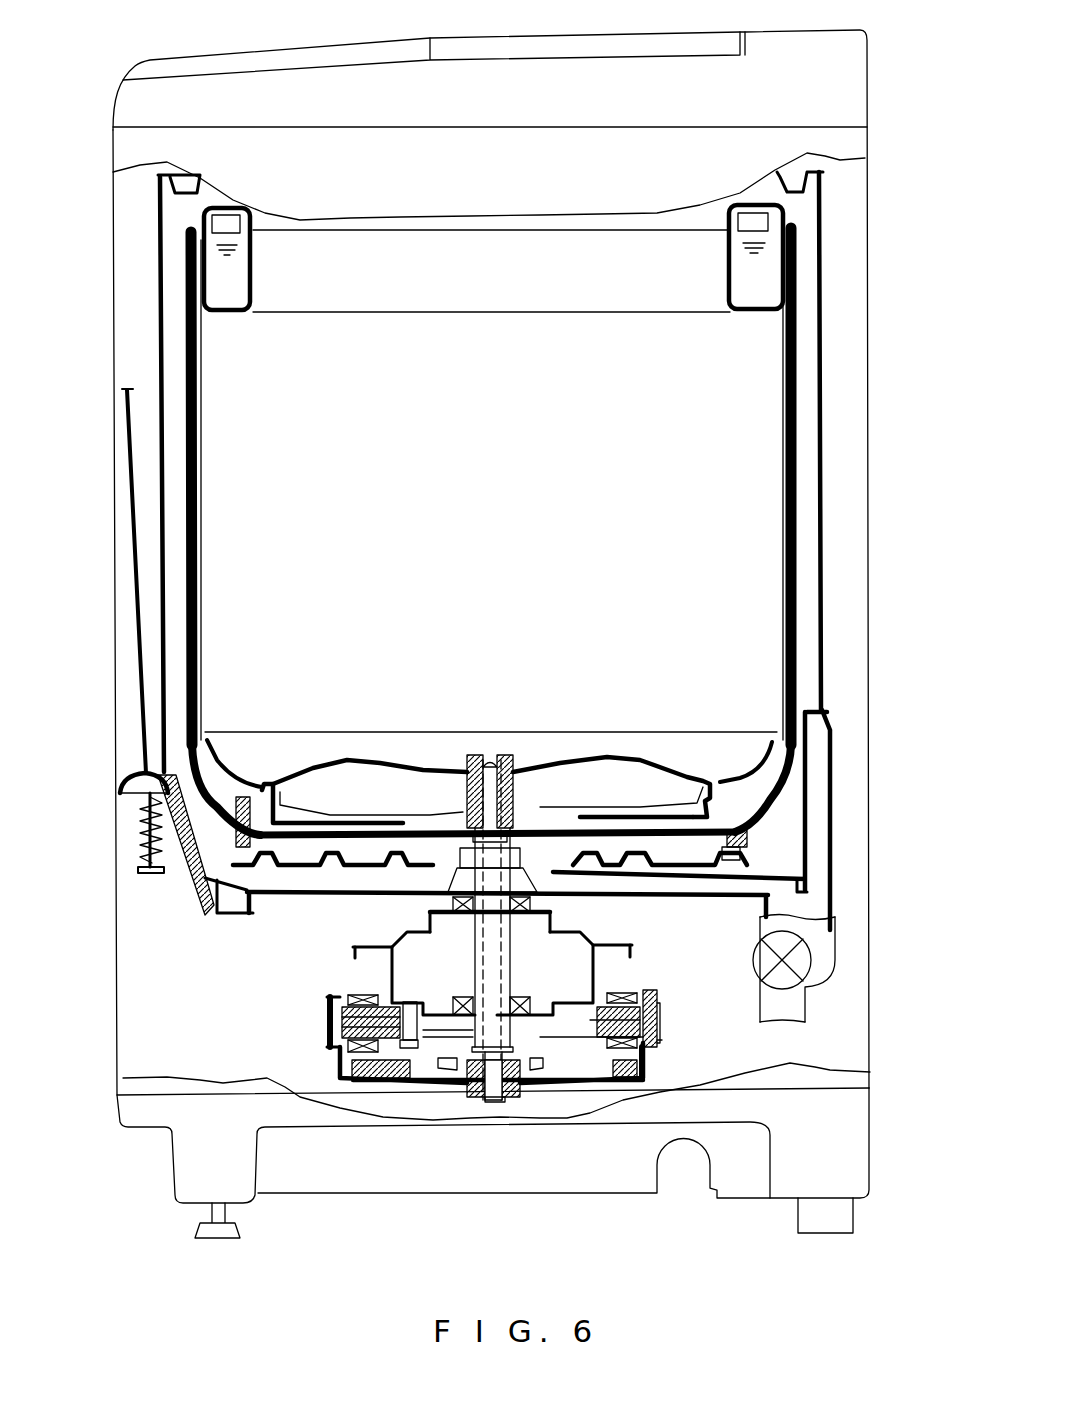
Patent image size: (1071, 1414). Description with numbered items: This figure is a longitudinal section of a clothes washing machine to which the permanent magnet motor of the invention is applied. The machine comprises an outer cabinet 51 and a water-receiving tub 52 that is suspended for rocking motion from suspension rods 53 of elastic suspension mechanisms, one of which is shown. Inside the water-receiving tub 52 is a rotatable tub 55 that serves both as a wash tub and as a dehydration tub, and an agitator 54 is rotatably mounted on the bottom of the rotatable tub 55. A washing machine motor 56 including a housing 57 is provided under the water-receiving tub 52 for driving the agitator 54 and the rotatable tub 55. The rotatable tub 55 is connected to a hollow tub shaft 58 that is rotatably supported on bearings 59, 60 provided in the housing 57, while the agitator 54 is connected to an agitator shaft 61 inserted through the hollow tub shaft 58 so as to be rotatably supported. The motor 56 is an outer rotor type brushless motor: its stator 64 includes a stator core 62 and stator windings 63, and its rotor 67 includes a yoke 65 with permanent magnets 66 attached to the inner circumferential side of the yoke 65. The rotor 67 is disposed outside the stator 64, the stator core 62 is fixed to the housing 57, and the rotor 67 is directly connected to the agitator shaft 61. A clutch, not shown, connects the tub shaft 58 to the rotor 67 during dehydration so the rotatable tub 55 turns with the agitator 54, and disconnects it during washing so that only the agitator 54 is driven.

The outer cabinet 51 is at (868, 452).
The water-receiving tub 52 is at (823, 386).
The suspension rods 53 is at (133, 557).
The agitator 54 is at (416, 757).
The rotatable tub 55 is at (797, 532).
The washing machine motor 56 is at (299, 1043).
The housing 57 is at (390, 978).
The hollow tub shaft 58 is at (510, 983).
The bearing 59 is at (550, 918).
The bearing 60 is at (473, 997).
The agitator shaft 61 is at (515, 796).
The stator core 62 is at (593, 1020).
The stator windings 63 is at (630, 990).
The stator 64 is at (598, 1058).
The yoke 65 is at (657, 1018).
The permanent magnets 66 is at (657, 988).
The rotor 67 is at (672, 1046).